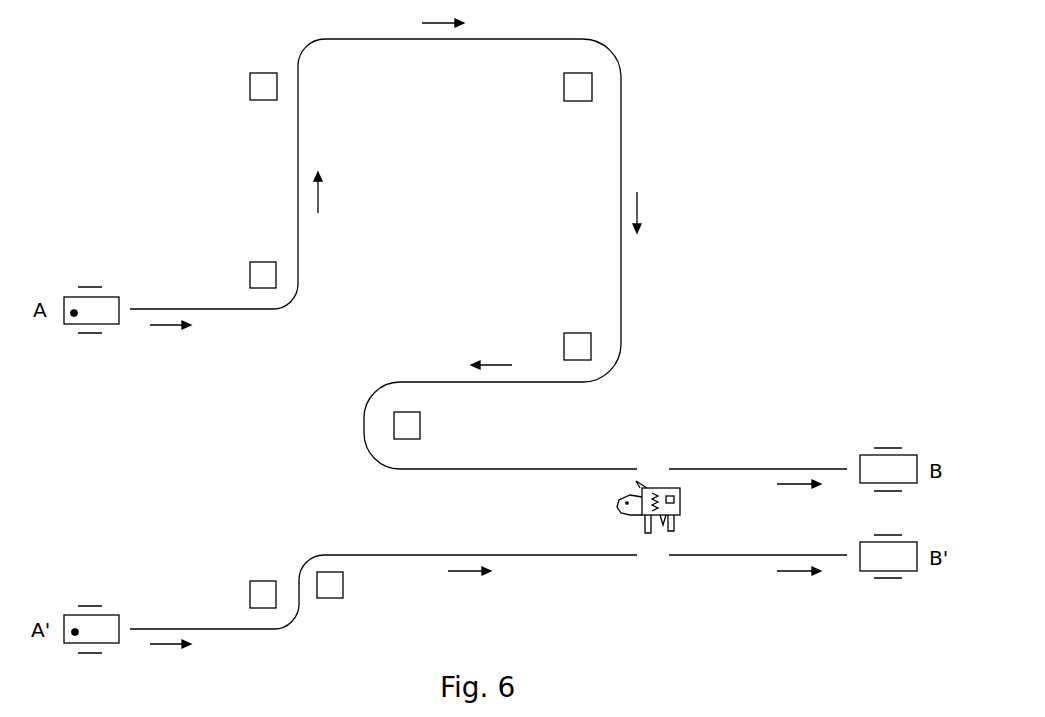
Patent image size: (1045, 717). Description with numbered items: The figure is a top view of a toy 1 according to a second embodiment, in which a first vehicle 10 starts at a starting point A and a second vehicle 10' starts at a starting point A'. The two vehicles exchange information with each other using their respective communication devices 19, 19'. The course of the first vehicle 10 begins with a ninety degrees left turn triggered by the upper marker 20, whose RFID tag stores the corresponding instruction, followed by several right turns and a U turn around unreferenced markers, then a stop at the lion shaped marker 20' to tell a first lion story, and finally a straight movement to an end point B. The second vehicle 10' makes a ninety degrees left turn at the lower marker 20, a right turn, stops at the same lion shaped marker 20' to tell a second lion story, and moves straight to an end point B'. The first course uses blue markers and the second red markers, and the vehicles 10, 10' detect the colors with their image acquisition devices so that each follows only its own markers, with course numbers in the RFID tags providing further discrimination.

The toy 1 is at (763, 94).
The first vehicle 10 is at (112, 296).
The second vehicle 10' is at (115, 612).
The communication device 19 is at (102, 335).
The communication device 19' is at (105, 653).
The marker 20 is at (401, 340).
The lion shaped marker 20' is at (671, 473).